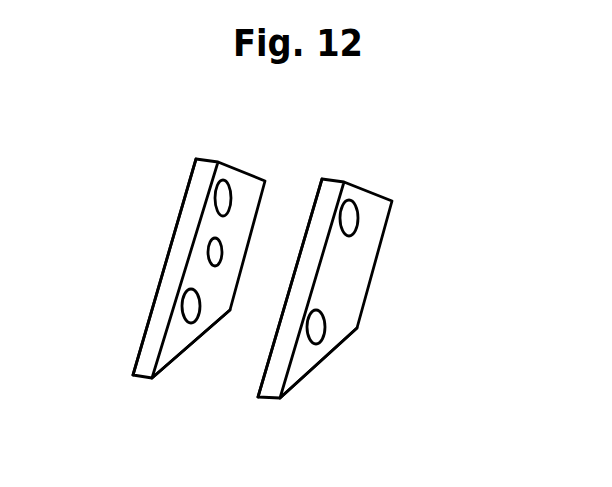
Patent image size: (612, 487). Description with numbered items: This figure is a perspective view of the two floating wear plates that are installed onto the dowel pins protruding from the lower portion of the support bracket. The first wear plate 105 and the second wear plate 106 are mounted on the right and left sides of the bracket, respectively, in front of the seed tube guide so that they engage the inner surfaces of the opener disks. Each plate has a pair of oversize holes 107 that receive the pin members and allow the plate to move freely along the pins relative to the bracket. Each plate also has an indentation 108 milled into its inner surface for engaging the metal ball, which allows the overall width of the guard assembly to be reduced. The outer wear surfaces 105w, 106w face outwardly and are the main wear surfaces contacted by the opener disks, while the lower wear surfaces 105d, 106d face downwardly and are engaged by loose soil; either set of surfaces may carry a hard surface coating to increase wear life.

The first floating wear plate 105 is at (363, 195).
The outer wear surface 105w is at (345, 328).
The lower wear surface 105d is at (312, 373).
The second floating wear plate 106 is at (235, 172).
The outer wear surface 106w is at (172, 240).
The lower wear surface 106d is at (178, 363).
The oversize holes 107 is at (323, 322).
The indentation 108 is at (220, 252).